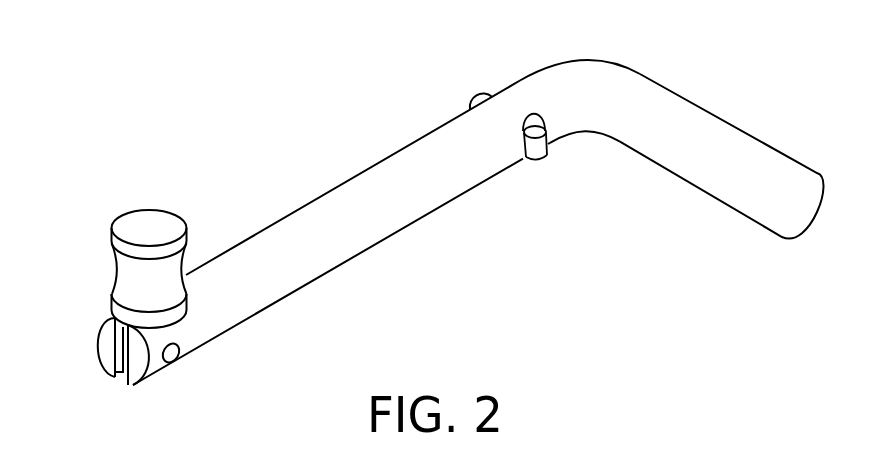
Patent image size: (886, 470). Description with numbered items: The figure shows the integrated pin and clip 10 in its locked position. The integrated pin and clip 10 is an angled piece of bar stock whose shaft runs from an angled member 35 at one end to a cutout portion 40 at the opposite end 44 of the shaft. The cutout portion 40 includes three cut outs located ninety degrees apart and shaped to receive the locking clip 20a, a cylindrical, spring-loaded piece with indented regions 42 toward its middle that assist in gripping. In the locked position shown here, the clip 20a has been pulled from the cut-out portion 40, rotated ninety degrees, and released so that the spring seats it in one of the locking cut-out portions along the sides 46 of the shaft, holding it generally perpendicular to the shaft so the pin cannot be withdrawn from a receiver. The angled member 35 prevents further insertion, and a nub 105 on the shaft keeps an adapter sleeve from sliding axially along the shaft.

The integrated pin and clip 10 is at (430, 218).
The clip 20a is at (152, 222).
The angled member 35 is at (703, 173).
The cutout portion 40 is at (123, 377).
The indented regions 42 is at (111, 246).
The end of the shaft 44 is at (142, 368).
The sides of the shaft member 46 is at (222, 262).
The nubs 105 is at (538, 147).